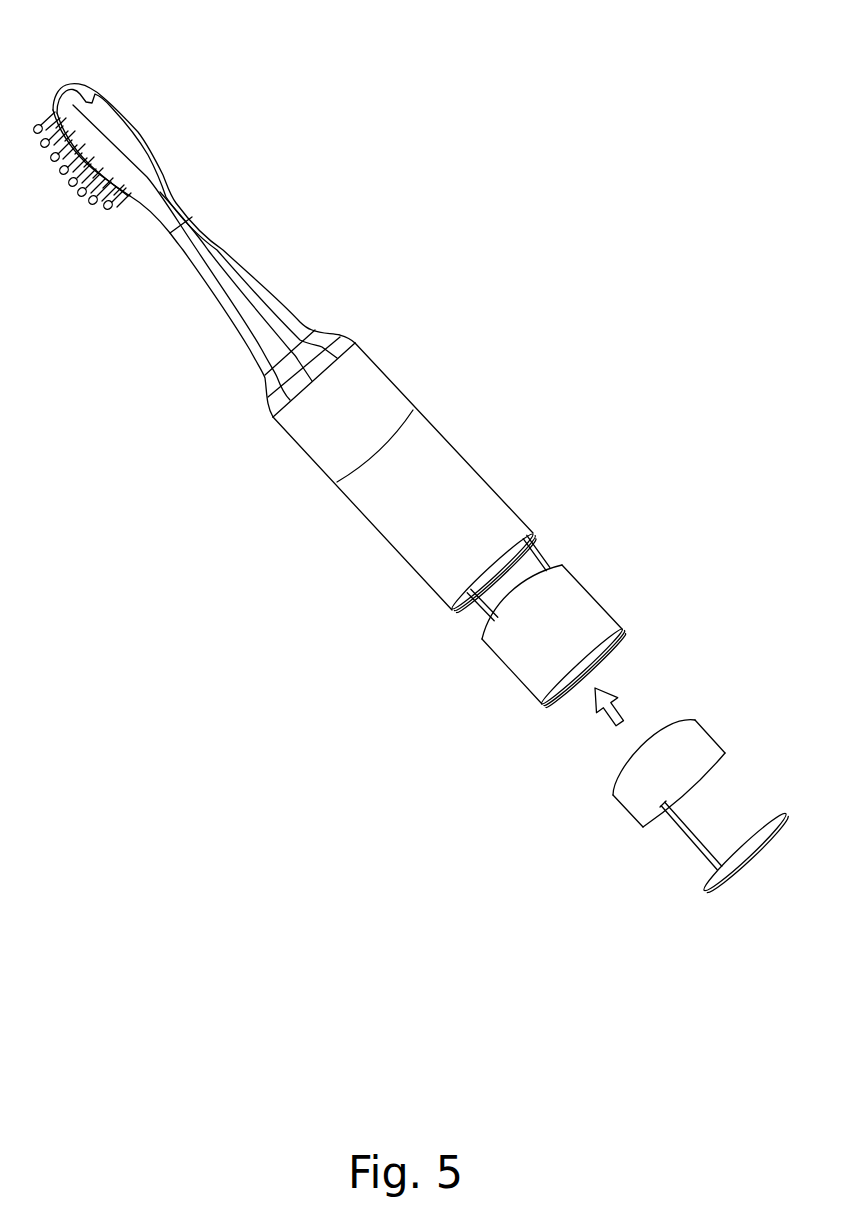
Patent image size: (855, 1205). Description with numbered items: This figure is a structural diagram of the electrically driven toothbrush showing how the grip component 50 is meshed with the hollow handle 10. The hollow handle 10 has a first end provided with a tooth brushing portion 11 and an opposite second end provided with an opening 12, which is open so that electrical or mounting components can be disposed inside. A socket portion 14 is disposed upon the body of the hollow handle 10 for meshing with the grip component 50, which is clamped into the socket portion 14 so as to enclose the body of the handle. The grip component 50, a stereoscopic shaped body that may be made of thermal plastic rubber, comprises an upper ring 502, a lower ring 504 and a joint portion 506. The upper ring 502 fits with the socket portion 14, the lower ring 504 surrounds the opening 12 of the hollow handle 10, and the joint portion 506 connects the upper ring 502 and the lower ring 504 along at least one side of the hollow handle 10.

The hollow handle 10 is at (388, 403).
The tooth brushing portion 11 is at (123, 137).
The opening 12 is at (601, 650).
The socket portion 14 is at (520, 583).
The grip component 50 is at (657, 880).
The upper ring 502 is at (643, 805).
The lower ring 504 is at (711, 917).
The joint portion 506 is at (692, 850).